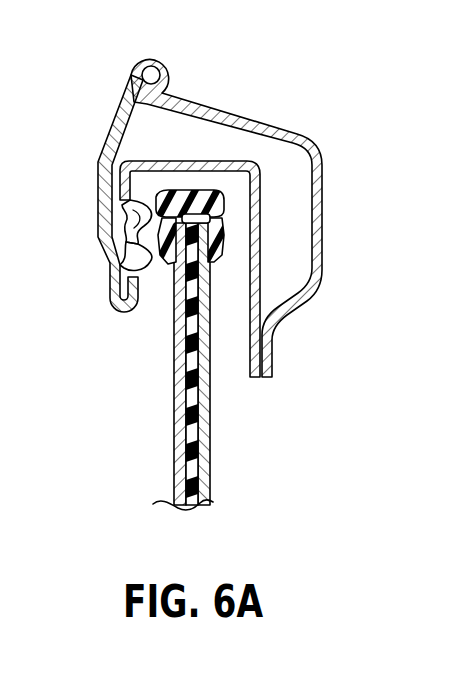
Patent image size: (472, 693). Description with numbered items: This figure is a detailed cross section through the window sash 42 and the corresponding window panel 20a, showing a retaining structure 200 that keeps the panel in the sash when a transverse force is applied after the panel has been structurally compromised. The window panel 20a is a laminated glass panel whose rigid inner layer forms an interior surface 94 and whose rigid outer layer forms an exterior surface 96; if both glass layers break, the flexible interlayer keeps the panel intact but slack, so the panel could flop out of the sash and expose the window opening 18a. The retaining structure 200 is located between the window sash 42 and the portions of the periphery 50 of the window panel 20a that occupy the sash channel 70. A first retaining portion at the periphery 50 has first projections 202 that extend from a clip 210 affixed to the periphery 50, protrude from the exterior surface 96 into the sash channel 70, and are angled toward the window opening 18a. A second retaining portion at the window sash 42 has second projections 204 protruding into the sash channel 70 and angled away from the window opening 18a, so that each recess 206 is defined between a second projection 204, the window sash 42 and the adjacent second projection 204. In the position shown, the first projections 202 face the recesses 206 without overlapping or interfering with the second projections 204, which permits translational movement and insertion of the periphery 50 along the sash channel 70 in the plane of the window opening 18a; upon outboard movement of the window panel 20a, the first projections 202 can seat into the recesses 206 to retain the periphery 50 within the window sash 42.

The window sash 42 is at (140, 58).
The sash channel 70 is at (150, 176).
The retaining structure 200 is at (195, 180).
The first projection 202 is at (170, 216).
The second projection 204 is at (138, 270).
The recess 206 is at (150, 240).
The clip 210 is at (222, 207).
The periphery of the window panel 50 is at (208, 292).
The window opening 18a is at (212, 419).
The interior surface 94 is at (205, 448).
The exterior surface 96 is at (172, 448).
The window panel 20a is at (210, 472).